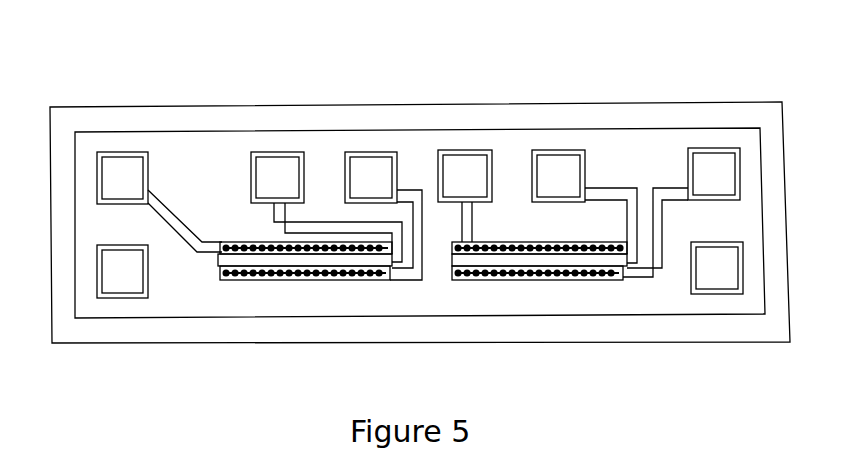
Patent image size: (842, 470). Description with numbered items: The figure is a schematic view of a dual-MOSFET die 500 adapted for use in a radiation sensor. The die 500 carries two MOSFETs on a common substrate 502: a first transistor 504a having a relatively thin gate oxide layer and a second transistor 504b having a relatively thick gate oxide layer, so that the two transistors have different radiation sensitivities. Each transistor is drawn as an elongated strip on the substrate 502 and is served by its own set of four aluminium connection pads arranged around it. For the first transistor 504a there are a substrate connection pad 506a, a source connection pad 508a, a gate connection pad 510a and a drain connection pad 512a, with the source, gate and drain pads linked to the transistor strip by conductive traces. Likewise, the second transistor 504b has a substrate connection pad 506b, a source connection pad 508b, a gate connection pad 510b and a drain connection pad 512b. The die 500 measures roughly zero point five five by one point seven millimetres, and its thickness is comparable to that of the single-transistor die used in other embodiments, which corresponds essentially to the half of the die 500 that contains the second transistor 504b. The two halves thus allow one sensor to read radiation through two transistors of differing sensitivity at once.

The MOSFET die 500 is at (148, 41).
The substrate 502 is at (70, 345).
The first transistor 504a is at (278, 258).
The second transistor 504b is at (495, 258).
The substrate connection pad 506a is at (116, 299).
The substrate connection pad 506b is at (707, 294).
The source connection pad 508a is at (127, 152).
The source connection pad 508b is at (473, 150).
The gate connection pad 510a is at (280, 152).
The gate connection pad 510b is at (563, 150).
The drain connection pad 512a is at (368, 152).
The drain connection pad 512b is at (725, 148).